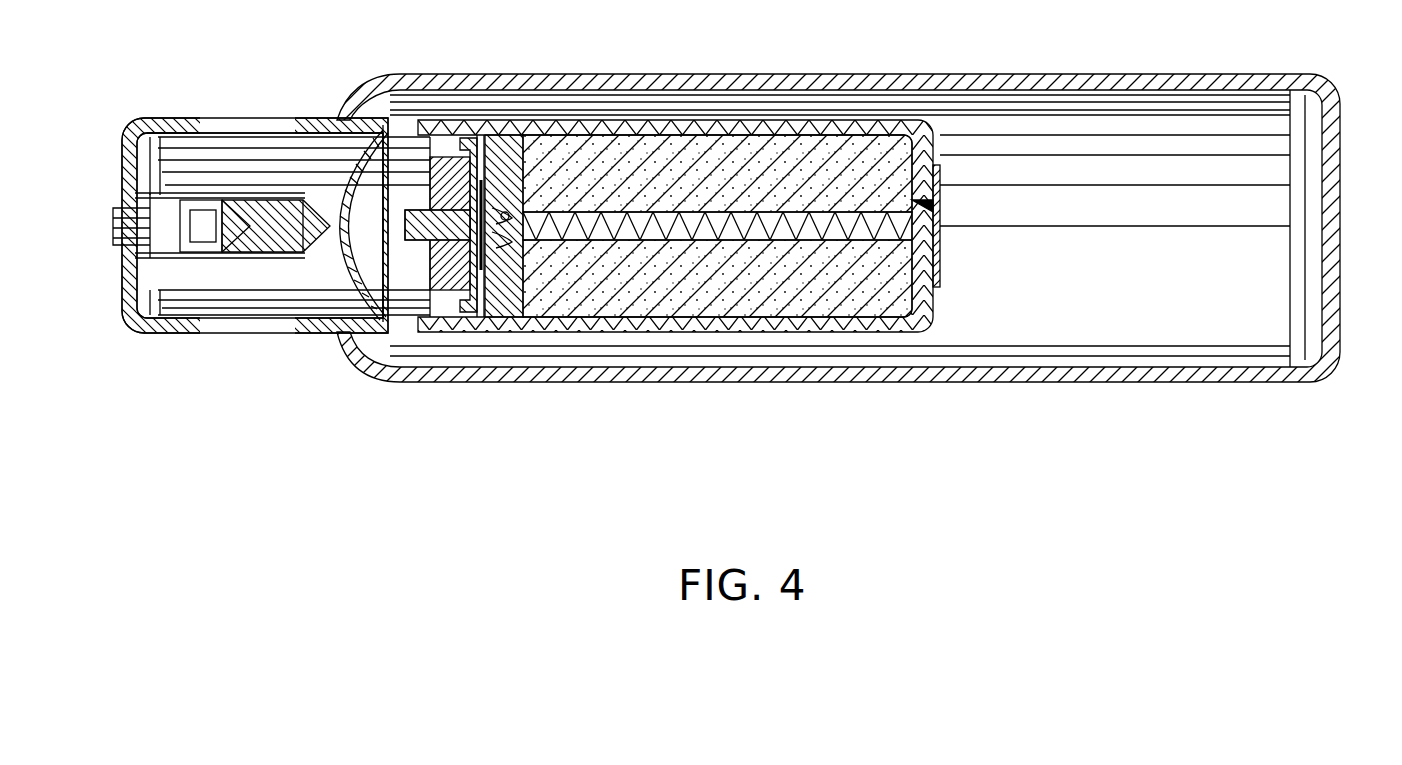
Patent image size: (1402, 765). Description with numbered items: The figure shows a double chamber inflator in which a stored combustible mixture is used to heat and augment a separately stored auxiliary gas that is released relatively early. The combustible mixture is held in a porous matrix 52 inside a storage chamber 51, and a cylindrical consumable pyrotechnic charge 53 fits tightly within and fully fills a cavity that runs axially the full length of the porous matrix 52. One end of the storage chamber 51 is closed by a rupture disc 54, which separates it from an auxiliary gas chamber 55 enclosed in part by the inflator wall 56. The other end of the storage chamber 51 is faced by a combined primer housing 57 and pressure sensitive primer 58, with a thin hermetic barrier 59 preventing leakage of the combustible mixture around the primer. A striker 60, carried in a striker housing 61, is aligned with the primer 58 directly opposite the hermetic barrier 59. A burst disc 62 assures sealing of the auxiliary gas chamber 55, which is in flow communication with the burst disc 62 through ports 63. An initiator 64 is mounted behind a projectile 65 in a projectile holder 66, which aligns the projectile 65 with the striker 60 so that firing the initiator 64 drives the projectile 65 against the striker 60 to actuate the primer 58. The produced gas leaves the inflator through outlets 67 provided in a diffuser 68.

The storage chamber 51 is at (683, 135).
The porous matrix 52 is at (790, 143).
The consumable pyrotechnic charge 53 is at (858, 212).
The rupture disc 54 is at (940, 224).
The auxiliary gas chamber 55 is at (1133, 265).
The inflator wall 56 is at (1318, 87).
The primer housing 57 is at (505, 140).
The pressure sensitive primer 58 is at (530, 215).
The hermetic barrier 59 is at (522, 252).
The striker 60 is at (422, 225).
The striker housing 61 is at (443, 290).
The burst disc 62 is at (345, 272).
The ports 63 is at (407, 125).
The initiator 64 is at (165, 250).
The projectile 65 is at (268, 233).
The projectile holder 66 is at (172, 185).
The outlets 67 is at (265, 125).
The diffuser 68 is at (307, 148).